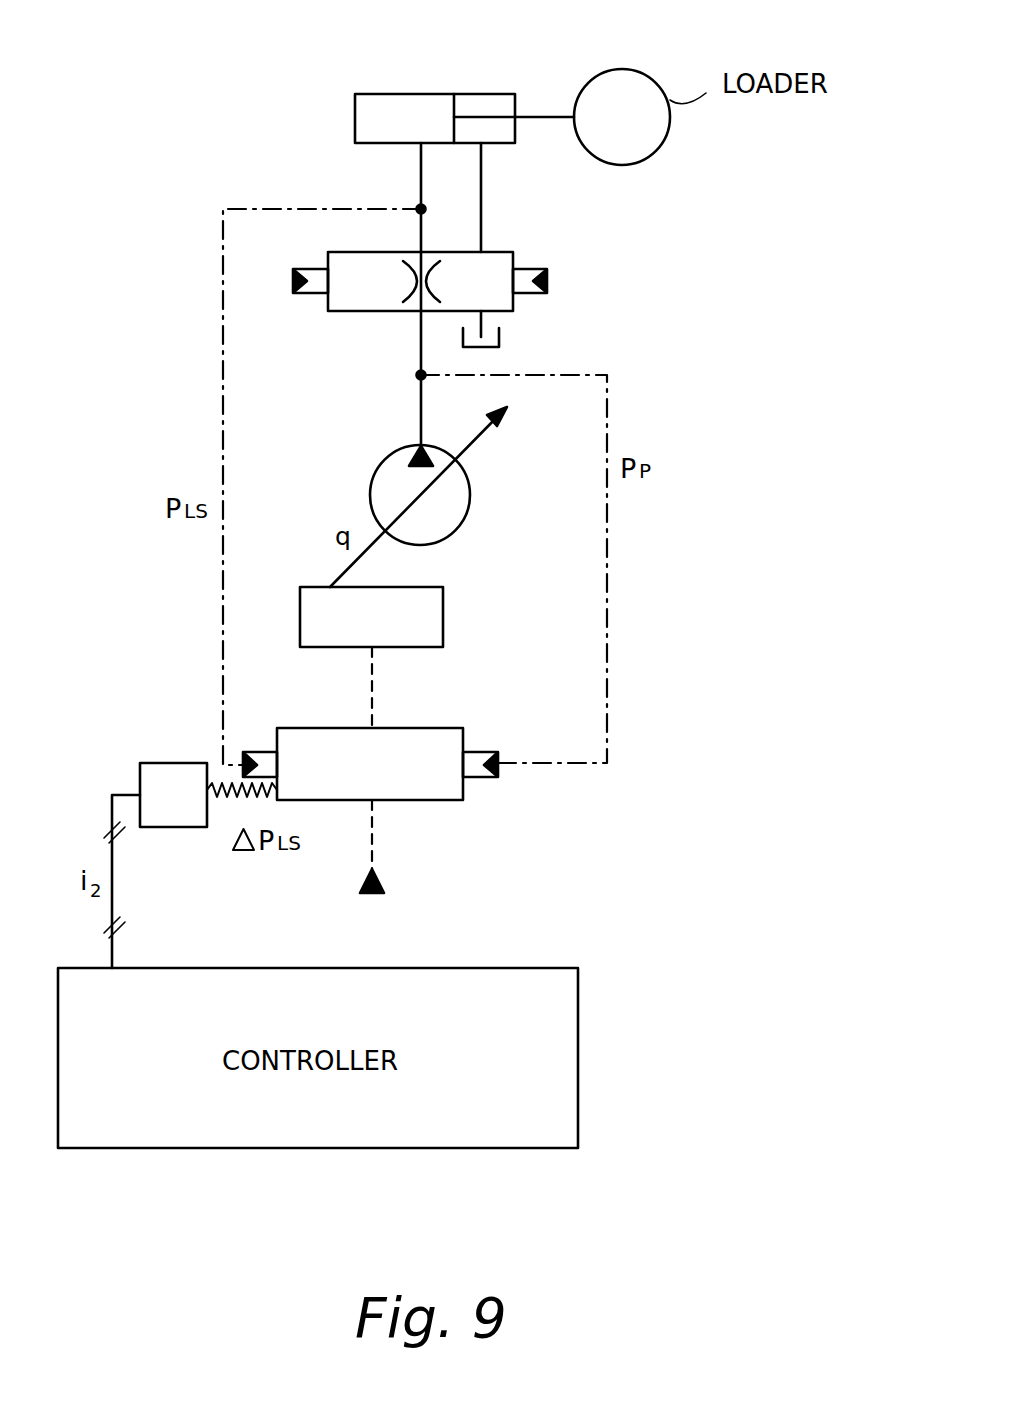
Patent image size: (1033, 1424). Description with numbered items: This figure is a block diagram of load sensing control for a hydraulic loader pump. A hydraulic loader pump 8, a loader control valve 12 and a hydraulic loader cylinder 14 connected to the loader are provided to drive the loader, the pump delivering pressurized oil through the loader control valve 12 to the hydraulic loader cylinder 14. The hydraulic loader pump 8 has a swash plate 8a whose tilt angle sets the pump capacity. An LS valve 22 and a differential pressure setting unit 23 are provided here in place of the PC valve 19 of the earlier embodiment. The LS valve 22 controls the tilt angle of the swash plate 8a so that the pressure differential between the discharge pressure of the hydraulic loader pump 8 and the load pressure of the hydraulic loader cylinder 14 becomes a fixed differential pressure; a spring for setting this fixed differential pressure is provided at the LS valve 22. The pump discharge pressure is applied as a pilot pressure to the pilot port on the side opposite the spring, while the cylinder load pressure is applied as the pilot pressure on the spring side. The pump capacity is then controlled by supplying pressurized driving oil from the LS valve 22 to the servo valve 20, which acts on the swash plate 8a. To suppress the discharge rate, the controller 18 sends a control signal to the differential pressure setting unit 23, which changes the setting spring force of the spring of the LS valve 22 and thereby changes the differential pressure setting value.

The hydraulic loader cylinder 14 is at (385, 93).
The loader control valve 12 is at (497, 252).
The hydraulic loader pump 8 is at (373, 483).
The swash plate 8a is at (478, 430).
The servo valve 20 is at (446, 613).
The LS valve 22 is at (448, 728).
The PC valve 19 is at (220, 788).
The differential pressure setting unit 23 is at (187, 763).
The controller 18 is at (559, 967).